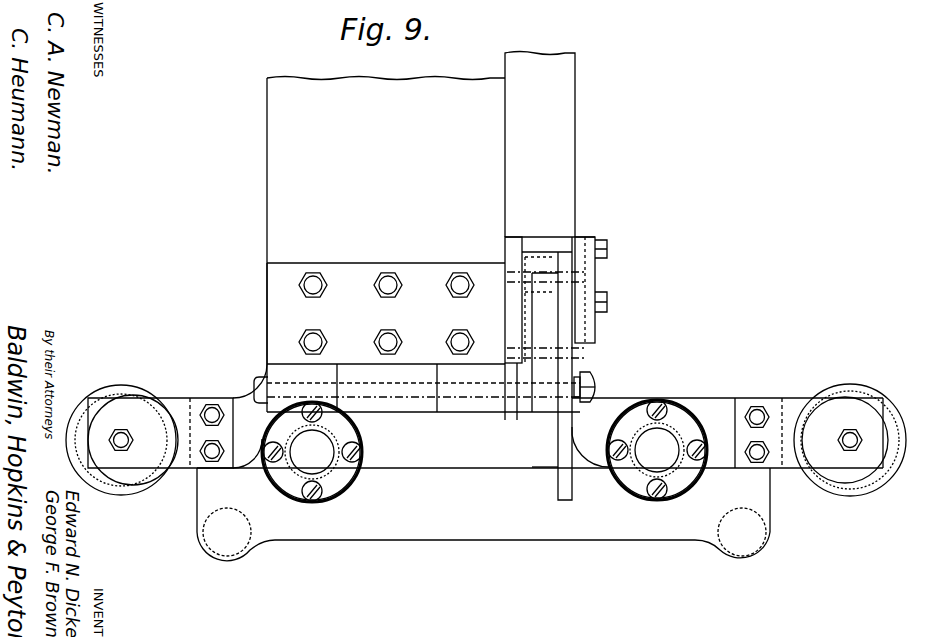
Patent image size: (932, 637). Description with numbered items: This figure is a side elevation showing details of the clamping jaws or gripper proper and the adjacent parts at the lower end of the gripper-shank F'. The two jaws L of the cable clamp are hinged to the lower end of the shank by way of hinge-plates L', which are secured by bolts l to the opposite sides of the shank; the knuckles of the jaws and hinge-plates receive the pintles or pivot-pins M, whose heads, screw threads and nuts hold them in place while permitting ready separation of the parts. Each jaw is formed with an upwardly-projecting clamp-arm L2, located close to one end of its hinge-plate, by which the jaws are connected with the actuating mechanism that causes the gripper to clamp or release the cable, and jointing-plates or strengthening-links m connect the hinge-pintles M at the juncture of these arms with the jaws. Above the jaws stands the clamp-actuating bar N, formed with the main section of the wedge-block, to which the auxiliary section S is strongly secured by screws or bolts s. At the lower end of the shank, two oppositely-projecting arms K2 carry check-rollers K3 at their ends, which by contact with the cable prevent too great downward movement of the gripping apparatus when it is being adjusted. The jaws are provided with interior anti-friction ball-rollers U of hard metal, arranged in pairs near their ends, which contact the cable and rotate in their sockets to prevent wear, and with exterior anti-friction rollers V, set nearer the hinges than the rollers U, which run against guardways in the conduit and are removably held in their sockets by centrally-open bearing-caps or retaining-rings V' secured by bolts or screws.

The frame block F' is at (386, 245).
The clamp-actuating bar N is at (550, 145).
The hinge-plates L' is at (386, 313).
The bolts l is at (386, 313).
The jaws L is at (485, 462).
The clamp-arms L2 is at (555, 318).
The auxiliary section S is at (593, 290).
The screws or bolts s is at (607, 250).
The pintles or pivot-pins M is at (597, 390).
The jointing-plates or strengthening-links m is at (586, 378).
The check-rollers K3 is at (132, 373).
The arms K2 is at (165, 437).
The exterior anti-friction rollers V is at (484, 451).
The bearing-caps or retaining-rings V' is at (484, 451).
The anti-friction ball-rollers U is at (484, 532).